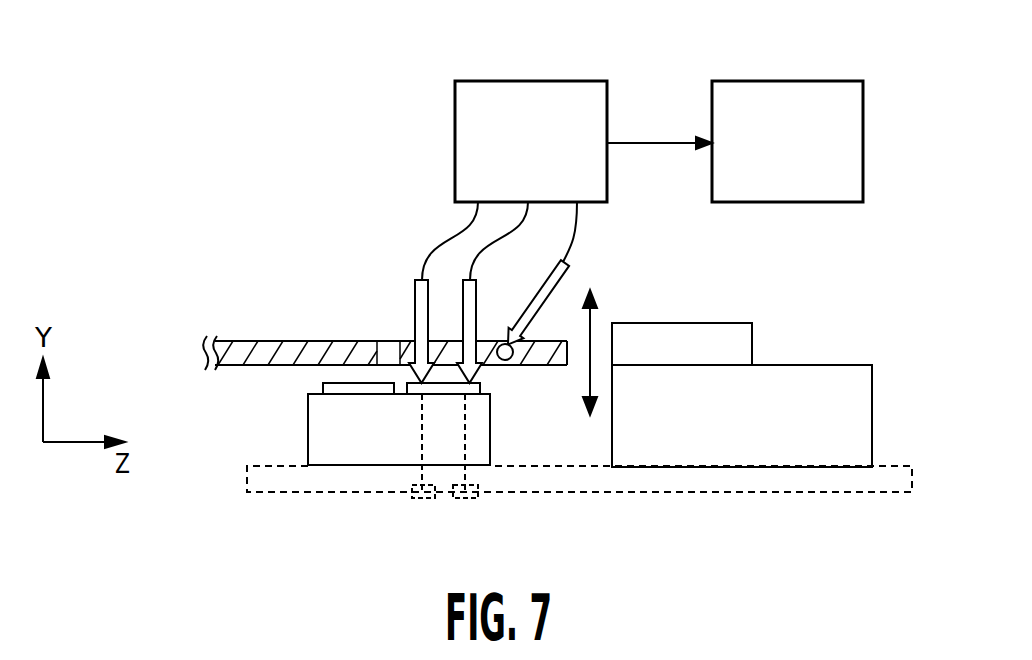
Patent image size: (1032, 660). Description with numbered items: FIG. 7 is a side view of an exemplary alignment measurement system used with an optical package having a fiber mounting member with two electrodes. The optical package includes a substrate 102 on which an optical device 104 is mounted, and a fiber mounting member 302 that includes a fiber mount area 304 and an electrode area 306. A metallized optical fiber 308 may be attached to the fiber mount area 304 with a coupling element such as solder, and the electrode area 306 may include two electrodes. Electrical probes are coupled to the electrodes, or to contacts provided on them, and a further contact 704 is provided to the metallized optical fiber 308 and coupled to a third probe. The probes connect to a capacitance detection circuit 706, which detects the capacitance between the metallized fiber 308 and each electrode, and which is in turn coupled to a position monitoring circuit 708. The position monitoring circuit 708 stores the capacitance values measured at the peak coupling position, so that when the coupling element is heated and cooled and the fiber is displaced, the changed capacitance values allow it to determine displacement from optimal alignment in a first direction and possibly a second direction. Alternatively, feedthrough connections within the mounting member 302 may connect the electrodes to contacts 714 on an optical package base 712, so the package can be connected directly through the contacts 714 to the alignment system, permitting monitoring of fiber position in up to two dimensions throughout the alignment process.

The substrate 102 is at (818, 365).
The optical device 104 is at (668, 323).
The fiber mounting member 302 is at (308, 437).
The fiber mount area 304 is at (323, 387).
The electrode area 306 is at (480, 390).
The optical fiber 308 is at (270, 340).
The contact 704 is at (510, 360).
The capacitance detection circuit 706 is at (537, 81).
The position monitoring circuit 708 is at (803, 81).
The optical package base 712 is at (628, 492).
The contacts 714 is at (422, 500).